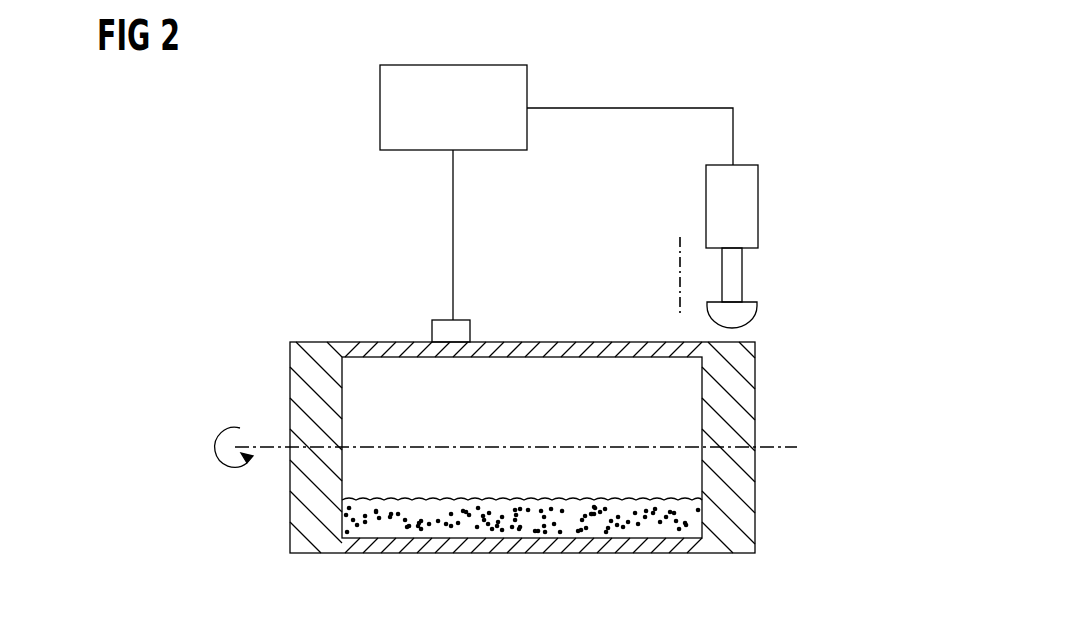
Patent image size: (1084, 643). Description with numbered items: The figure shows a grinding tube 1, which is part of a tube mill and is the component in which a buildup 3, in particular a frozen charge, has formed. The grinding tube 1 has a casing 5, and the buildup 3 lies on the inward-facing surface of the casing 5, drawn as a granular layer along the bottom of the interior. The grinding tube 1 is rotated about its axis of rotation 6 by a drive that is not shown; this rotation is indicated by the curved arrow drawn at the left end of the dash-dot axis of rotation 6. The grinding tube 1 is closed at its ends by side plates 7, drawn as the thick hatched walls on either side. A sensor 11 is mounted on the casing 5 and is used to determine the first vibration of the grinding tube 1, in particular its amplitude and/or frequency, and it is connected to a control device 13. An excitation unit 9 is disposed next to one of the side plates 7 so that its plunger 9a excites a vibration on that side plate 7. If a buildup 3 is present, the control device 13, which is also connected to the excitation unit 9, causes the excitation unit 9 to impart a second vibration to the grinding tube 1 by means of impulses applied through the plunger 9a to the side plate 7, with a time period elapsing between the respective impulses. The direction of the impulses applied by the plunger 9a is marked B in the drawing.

The grinding tube 1 is at (515, 423).
The buildup 3 is at (468, 528).
The casing 5 is at (558, 336).
The axis of rotation 6 is at (252, 446).
The side plate 7 is at (748, 405).
The excitation unit 9 is at (803, 237).
The plunger 9a is at (742, 280).
The sensor 11 is at (443, 318).
The control device 13 is at (380, 118).
The excitation direction B is at (678, 278).